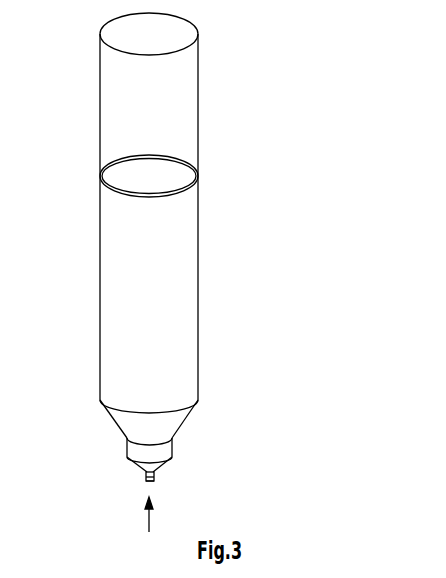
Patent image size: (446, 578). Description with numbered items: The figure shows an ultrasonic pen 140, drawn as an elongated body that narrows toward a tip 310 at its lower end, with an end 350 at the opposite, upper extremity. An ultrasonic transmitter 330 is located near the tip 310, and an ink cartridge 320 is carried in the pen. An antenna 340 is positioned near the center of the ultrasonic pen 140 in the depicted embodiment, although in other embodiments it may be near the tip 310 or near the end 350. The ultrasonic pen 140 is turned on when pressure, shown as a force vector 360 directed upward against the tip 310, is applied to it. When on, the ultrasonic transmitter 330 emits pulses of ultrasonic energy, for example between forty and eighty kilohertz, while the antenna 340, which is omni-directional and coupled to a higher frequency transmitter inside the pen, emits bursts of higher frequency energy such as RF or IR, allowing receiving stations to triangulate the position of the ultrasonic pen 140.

The ultrasonic pen 140 is at (296, 183).
The tip 310 is at (154, 481).
The ink cartridge 320 is at (146, 474).
The ultrasonic transmitter 330 is at (170, 453).
The antenna 340 is at (177, 195).
The end 350 is at (122, 27).
The force vector 360 is at (145, 520).